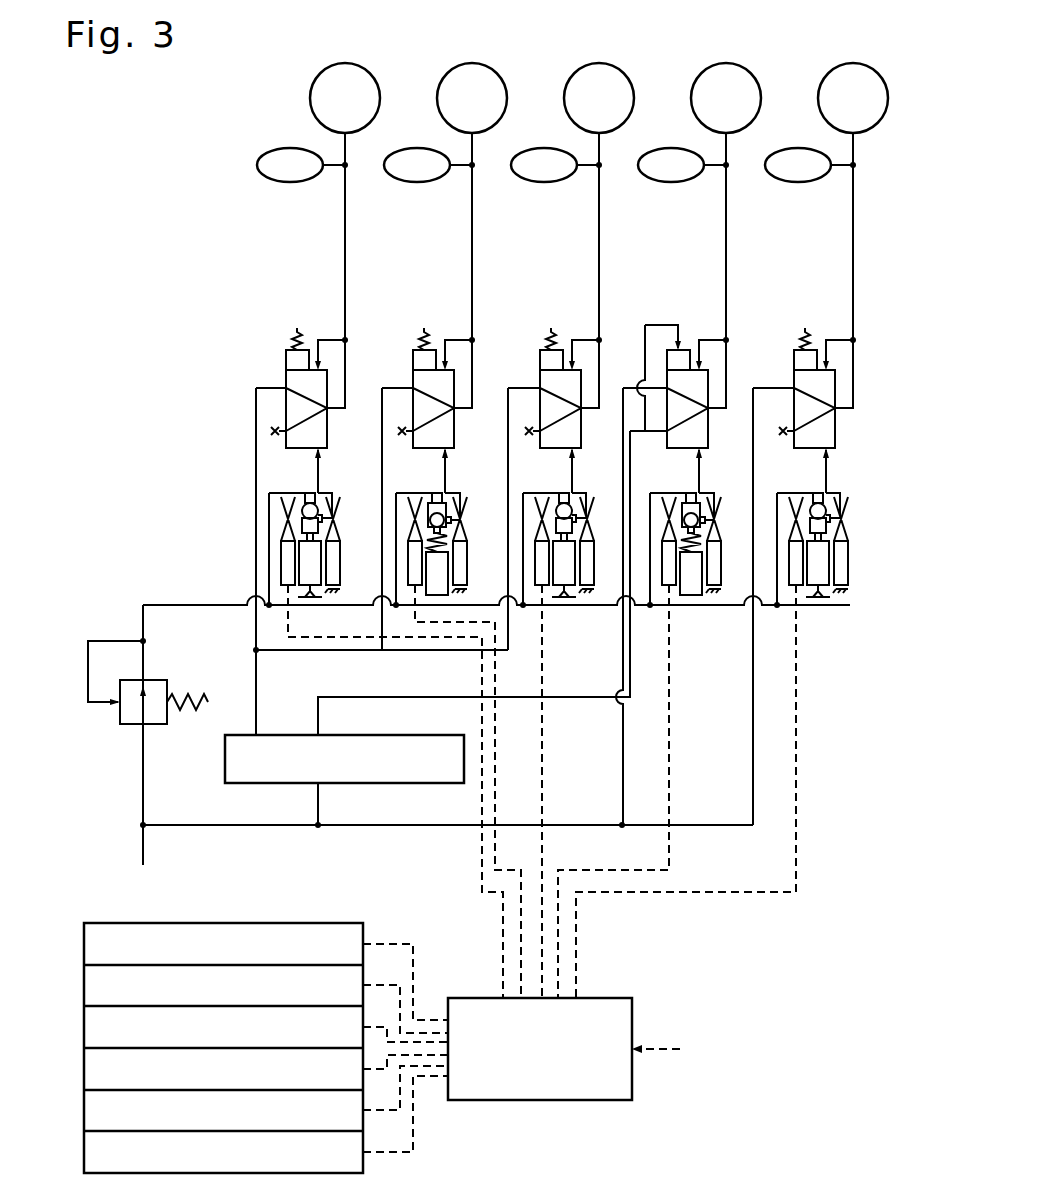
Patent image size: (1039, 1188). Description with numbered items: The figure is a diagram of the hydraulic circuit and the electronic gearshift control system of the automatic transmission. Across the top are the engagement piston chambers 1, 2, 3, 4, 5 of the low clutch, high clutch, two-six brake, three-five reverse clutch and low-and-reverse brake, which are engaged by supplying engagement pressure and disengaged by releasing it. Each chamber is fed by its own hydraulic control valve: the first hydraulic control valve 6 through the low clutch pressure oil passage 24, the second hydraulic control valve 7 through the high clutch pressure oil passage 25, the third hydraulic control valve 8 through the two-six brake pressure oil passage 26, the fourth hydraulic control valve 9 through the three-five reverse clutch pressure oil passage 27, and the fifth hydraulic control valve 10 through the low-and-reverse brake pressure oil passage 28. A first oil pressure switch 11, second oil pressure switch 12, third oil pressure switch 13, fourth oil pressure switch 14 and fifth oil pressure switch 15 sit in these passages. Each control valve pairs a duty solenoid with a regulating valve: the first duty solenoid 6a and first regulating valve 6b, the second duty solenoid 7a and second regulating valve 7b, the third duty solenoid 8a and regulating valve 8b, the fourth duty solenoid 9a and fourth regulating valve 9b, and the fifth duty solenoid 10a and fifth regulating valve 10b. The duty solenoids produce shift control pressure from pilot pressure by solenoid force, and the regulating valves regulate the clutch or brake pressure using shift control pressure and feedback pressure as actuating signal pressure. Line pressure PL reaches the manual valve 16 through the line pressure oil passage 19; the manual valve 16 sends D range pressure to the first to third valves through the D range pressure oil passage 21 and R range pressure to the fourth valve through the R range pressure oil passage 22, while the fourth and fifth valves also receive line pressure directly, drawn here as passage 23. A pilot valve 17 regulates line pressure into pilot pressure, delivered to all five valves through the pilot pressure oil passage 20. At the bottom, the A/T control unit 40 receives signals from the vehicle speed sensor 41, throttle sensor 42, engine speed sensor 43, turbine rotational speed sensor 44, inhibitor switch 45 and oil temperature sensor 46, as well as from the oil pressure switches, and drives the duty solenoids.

The engagement piston chamber 1 is at (368, 73).
The engagement piston chamber 2 is at (495, 73).
The engagement piston chamber 3 is at (622, 73).
The engagement piston chamber 4 is at (749, 73).
The engagement piston chamber 5 is at (876, 73).
The first hydraulic control valve 6 is at (279, 430).
The first duty solenoid 6a is at (302, 492).
The first regulating valve 6b is at (280, 370).
The second hydraulic control valve 7 is at (410, 430).
The second duty solenoid 7a is at (429, 492).
The second regulating valve 7b is at (407, 370).
The third hydraulic control valve 8 is at (536, 430).
The third duty solenoid 8a is at (556, 492).
The regulating valve 8b is at (534, 370).
The fourth hydraulic control valve 9 is at (665, 425).
The fourth duty solenoid 9a is at (680, 492).
The fourth regulating valve 9b is at (687, 333).
The fifth hydraulic control valve 10 is at (791, 430).
The fifth duty solenoid 10a is at (812, 492).
The fifth regulating valve 10b is at (782, 370).
The first oil pressure switch 11 is at (280, 148).
The second oil pressure switch 12 is at (407, 148).
The third oil pressure switch 13 is at (535, 148).
The fourth oil pressure switch 14 is at (658, 148).
The fifth oil pressure switch 15 is at (786, 148).
The manual valve 16 is at (408, 733).
The pilot valve 17 is at (128, 727).
The line pressure oil passage 19 is at (253, 823).
The pilot pressure oil passage 20 is at (207, 609).
The D range pressure oil passage 21 is at (443, 652).
The R range pressure oil passage 22 is at (572, 697).
The line pressure supply passage 23 is at (753, 672).
The low clutch pressure oil passage 24 is at (345, 218).
The high clutch pressure oil passage 25 is at (472, 218).
The 2-6 brake pressure oil passage 26 is at (599, 218).
The 3-5 reverse clutch pressure oil passage 27 is at (726, 218).
The low-and-reverse brake pressure oil passage 28 is at (853, 218).
The A/T control unit 40 is at (615, 997).
The vehicle speed sensor 41 is at (84, 944).
The throttle sensor 42 is at (84, 985).
The engine speed sensor 43 is at (84, 1027).
The turbine rotational speed sensor 44 is at (84, 1069).
The inhibitor switch 45 is at (84, 1110).
The oil temperature sensor 46 is at (84, 1152).